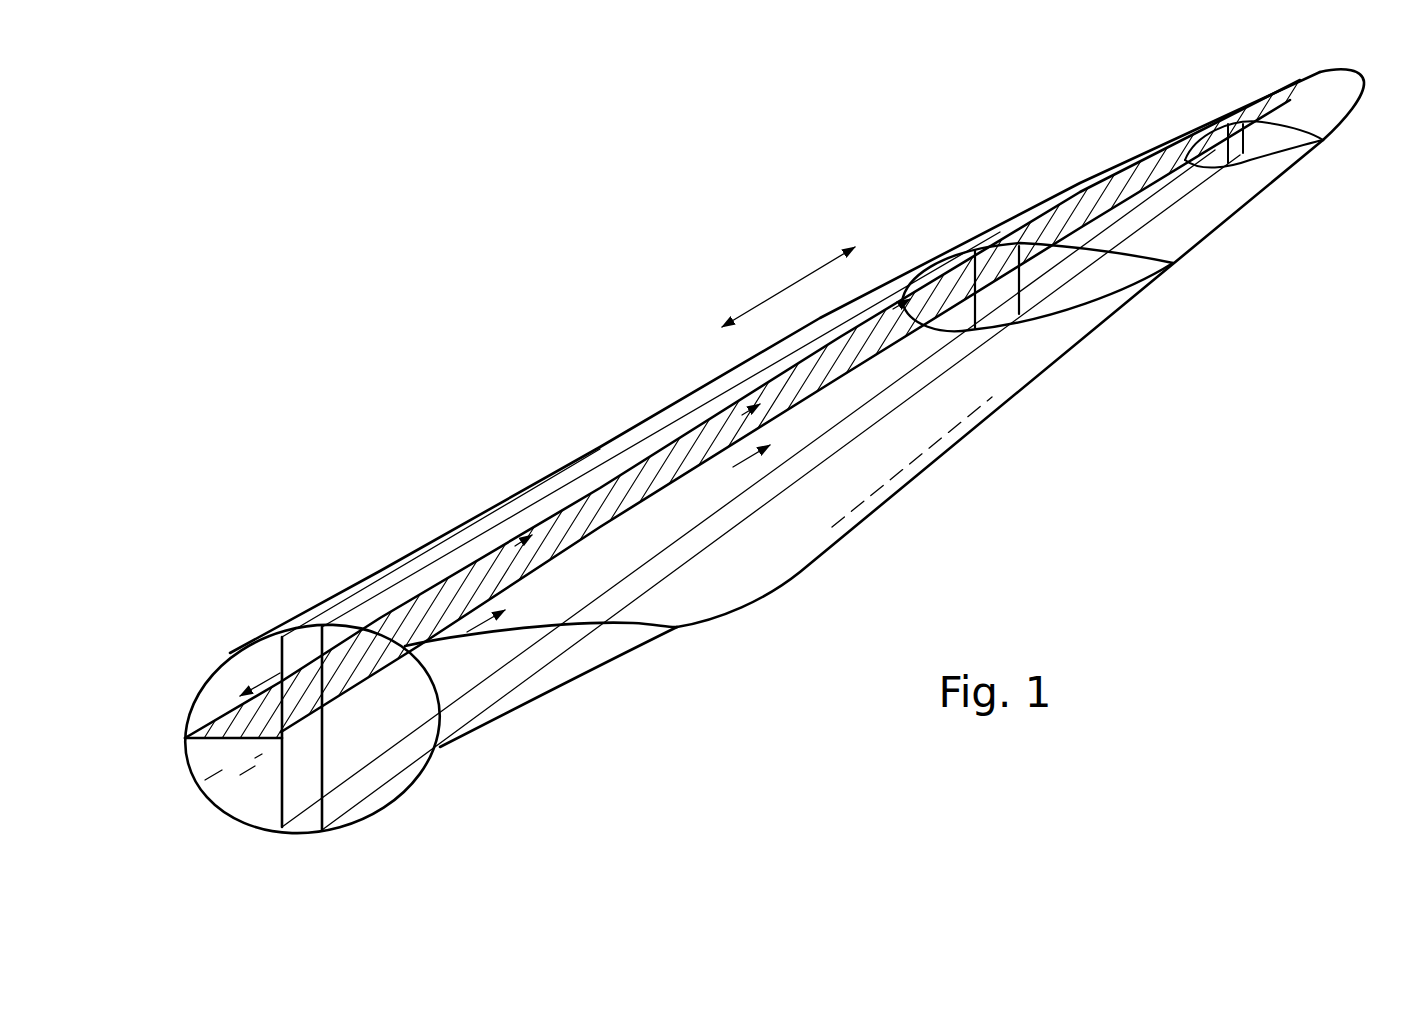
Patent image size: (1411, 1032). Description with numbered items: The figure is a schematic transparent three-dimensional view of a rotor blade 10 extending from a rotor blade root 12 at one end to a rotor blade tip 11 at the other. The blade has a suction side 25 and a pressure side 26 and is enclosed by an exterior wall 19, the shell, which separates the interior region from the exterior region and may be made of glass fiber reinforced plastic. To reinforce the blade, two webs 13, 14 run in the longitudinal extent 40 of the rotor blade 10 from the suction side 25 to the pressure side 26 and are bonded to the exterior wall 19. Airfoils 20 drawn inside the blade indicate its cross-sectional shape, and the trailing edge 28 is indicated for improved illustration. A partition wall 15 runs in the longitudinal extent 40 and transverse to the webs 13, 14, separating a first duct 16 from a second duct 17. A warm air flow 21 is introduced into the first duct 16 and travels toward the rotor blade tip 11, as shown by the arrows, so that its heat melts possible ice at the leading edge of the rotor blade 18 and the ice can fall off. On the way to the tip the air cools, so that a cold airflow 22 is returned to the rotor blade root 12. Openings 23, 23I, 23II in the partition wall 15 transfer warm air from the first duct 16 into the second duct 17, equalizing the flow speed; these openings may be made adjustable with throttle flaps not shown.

The rotor blade 10 is at (571, 358).
The rotor blade tip 11 is at (1372, 112).
The rotor blade root 12 is at (382, 836).
The web 13 is at (322, 775).
The web 14 is at (282, 755).
The partition wall 15 is at (712, 418).
The first duct 16 is at (231, 772).
The second duct 17 is at (258, 665).
The leading edge of the rotor blade 18 is at (185, 739).
The exterior wall 19 is at (385, 570).
The airfoils 20 is at (1325, 143).
The warm air flow 21 is at (268, 774).
The cold airflow 22 is at (276, 668).
The opening 23 is at (927, 297).
The opening 23I is at (1143, 157).
The opening 23II is at (1240, 137).
The suction side 25 is at (519, 500).
The pressure side 26 is at (323, 833).
The trailing edge 28 is at (900, 493).
The longitudinal extent 40 is at (787, 283).